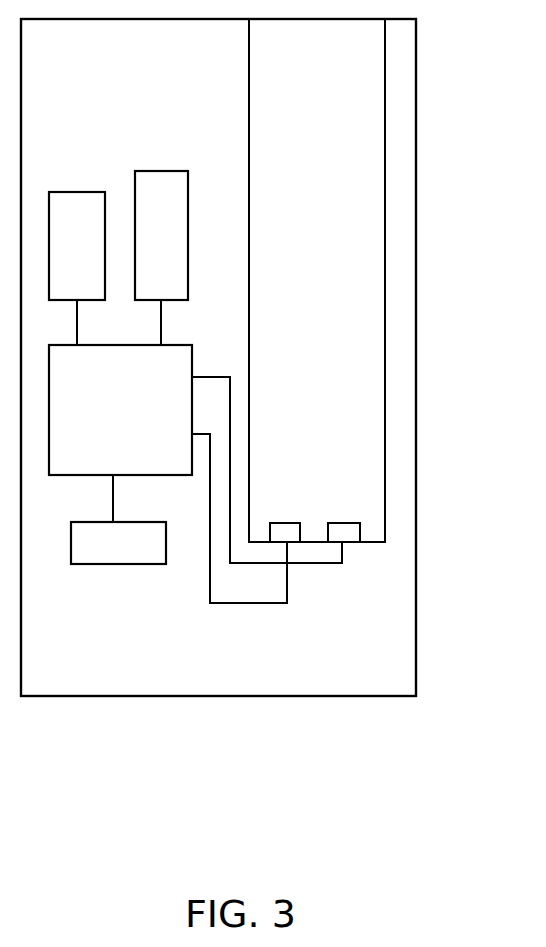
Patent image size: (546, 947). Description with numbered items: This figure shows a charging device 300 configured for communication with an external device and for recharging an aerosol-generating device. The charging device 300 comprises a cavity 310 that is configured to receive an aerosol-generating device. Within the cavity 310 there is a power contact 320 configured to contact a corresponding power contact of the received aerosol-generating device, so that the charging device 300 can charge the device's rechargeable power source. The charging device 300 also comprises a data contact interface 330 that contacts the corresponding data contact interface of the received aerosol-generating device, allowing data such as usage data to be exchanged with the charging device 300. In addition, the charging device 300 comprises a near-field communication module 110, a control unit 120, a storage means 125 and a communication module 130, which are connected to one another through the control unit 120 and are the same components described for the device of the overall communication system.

The charging device 300 is at (416, 80).
The cavity 310 is at (385, 213).
The power contact 320 is at (300, 523).
The data contact interface 330 is at (362, 528).
The near-field communication module 110 is at (58, 261).
The communication module 130 is at (142, 261).
The control unit 120 is at (96, 417).
The storage means 125 is at (96, 552).